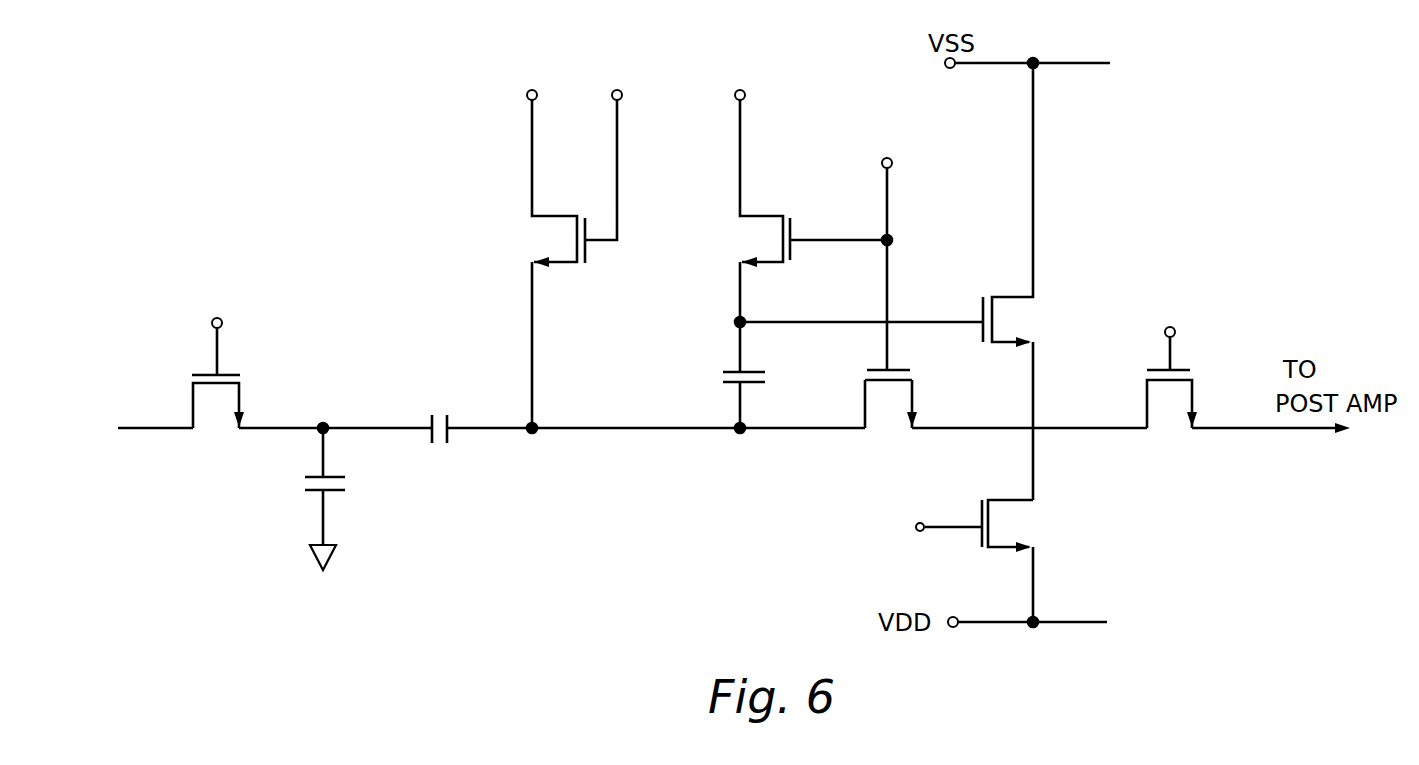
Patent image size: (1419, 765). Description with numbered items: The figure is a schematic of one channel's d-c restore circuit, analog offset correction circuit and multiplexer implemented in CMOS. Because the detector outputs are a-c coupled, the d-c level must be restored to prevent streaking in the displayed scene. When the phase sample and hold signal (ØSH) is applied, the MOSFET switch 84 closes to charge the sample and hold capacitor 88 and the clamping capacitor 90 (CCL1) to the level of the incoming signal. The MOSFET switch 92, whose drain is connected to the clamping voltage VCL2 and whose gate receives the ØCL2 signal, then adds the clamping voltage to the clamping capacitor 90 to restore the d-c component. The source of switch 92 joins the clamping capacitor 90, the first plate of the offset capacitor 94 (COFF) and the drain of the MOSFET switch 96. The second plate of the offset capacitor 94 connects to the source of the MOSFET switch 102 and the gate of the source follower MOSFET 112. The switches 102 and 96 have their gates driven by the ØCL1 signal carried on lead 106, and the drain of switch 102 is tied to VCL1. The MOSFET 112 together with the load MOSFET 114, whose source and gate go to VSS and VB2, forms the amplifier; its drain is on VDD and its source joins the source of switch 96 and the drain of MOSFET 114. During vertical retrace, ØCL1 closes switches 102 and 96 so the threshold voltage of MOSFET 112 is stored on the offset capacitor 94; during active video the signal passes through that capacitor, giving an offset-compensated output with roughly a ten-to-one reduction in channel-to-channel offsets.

The MOSFET switch 84 is at (192, 376).
The sample and hold capacitor 88 is at (307, 492).
The clamping capacitor 90 is at (443, 448).
The MOSFET switch 92 is at (537, 246).
The offset capacitor 94 is at (728, 366).
The MOSFET switch 96 is at (862, 373).
The MOSFET switch 102 is at (800, 227).
The lead 106 is at (1158, 360).
The source follower MOSFET 112 is at (983, 313).
The load MOSFET 114 is at (987, 501).